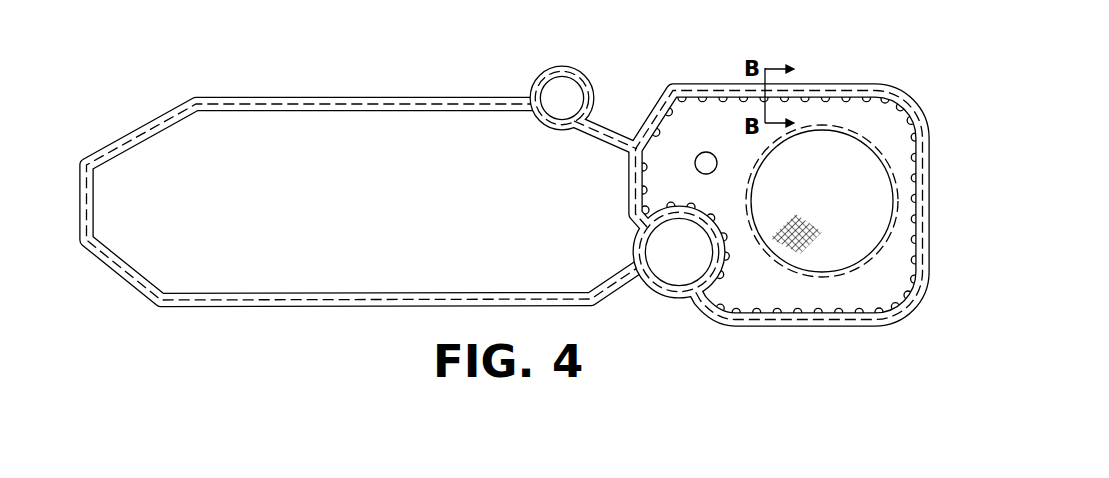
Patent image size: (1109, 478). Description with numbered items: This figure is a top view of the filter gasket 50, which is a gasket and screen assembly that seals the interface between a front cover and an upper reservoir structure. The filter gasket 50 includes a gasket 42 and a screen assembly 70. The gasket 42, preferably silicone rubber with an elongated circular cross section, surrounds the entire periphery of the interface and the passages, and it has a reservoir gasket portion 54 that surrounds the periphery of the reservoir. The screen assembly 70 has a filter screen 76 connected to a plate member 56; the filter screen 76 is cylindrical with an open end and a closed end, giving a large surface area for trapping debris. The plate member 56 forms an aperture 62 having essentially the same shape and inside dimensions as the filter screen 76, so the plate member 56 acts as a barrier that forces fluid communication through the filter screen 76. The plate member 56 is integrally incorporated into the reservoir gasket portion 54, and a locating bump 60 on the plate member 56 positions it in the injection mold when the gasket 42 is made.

The gasket 42 is at (331, 96).
The filter gasket 50 is at (755, 187).
The reservoir gasket portion 54 is at (818, 328).
The plate member 56 is at (777, 288).
The locating bump 60 is at (700, 151).
The aperture 62 is at (840, 144).
The screen assembly 70 is at (898, 192).
The filter screen 76 is at (818, 196).